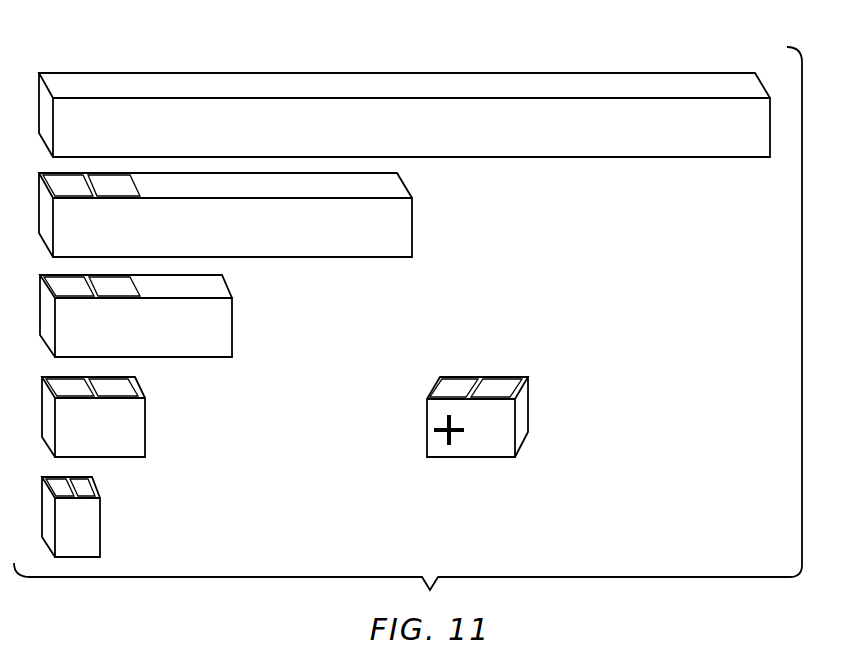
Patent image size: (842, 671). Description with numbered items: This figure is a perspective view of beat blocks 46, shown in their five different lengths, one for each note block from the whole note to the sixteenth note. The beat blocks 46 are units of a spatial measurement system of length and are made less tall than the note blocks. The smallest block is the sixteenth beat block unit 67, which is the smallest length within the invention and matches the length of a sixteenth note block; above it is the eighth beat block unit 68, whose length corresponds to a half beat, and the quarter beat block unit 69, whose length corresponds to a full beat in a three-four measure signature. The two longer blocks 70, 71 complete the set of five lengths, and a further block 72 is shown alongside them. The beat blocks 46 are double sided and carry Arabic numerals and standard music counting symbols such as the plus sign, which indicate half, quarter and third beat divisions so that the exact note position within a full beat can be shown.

The beat blocks 46 is at (510, 60).
The sixteenth beat block unit 67 is at (88, 527).
The eighth beat block unit 68 is at (132, 427).
The quarter beat block unit 69 is at (220, 335).
The long block 70 is at (398, 230).
The longest block 71 is at (655, 145).
The plus block 72 is at (488, 443).